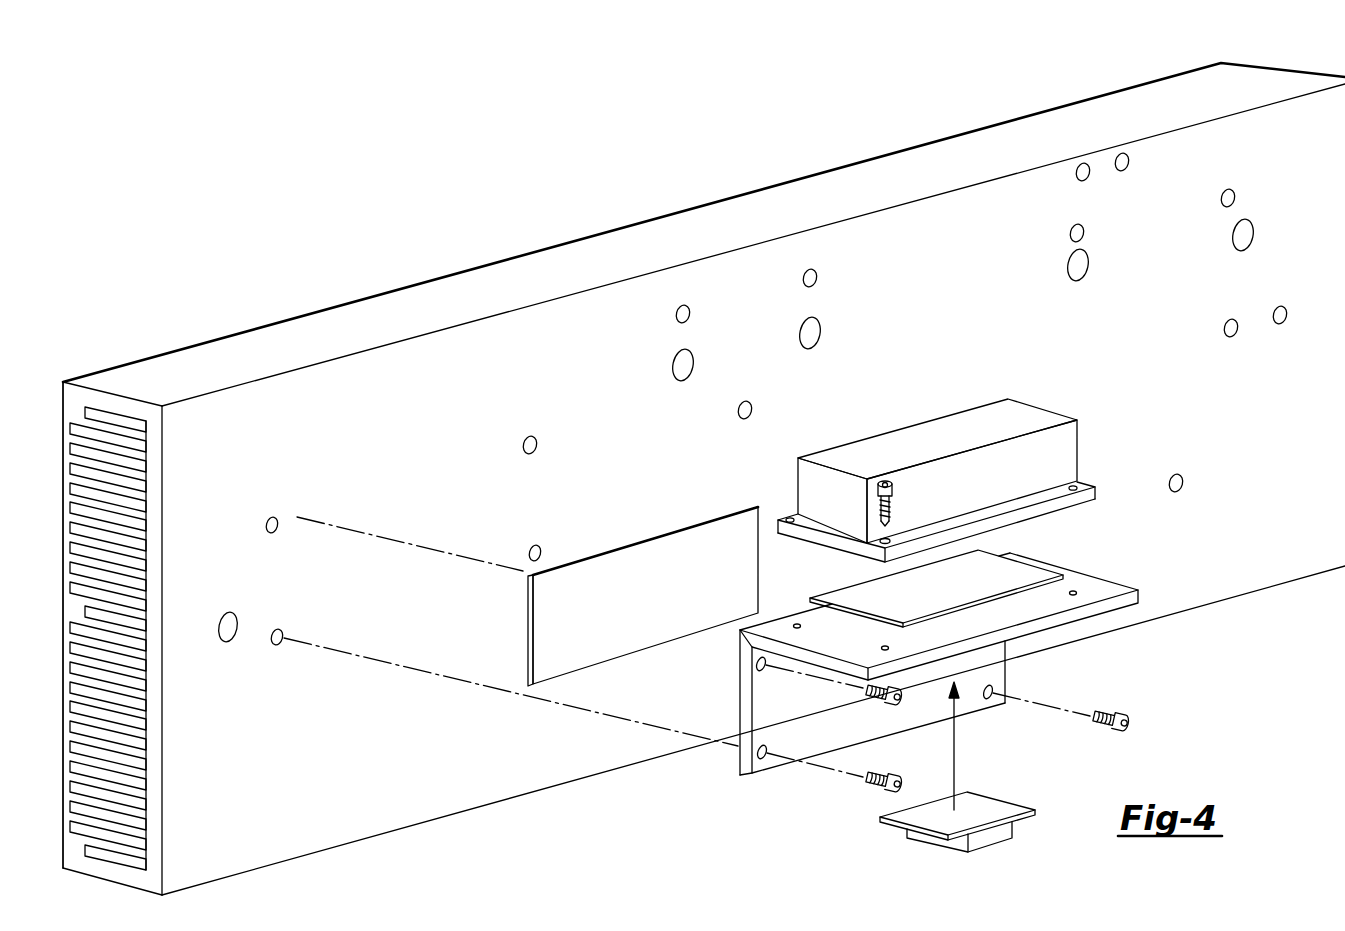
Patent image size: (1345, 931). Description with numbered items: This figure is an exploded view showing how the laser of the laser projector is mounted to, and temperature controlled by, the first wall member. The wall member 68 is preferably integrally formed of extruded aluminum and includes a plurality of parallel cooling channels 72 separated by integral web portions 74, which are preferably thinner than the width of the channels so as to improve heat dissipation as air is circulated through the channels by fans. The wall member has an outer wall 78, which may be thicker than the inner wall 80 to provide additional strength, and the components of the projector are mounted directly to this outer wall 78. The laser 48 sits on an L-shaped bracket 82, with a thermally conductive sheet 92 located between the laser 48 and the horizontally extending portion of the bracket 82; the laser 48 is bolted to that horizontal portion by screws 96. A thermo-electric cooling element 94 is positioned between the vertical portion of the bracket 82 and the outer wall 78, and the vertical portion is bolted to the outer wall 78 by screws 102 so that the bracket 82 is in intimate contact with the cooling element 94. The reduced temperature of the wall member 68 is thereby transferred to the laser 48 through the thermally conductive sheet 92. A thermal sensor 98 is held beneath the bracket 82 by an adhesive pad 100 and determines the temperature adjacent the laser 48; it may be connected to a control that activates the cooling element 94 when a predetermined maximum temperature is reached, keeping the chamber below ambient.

The laser 48 is at (900, 450).
The wall member 68 is at (578, 264).
The cooling channels 72 is at (138, 447).
The web portions 74 is at (112, 666).
The outer wall 78 is at (153, 503).
The inner wall 80 is at (72, 490).
The bracket 82 is at (1105, 587).
The thermally conductive sheet 92 is at (1010, 572).
The thermo-electric cooling element 94 is at (652, 552).
The screws 96 is at (893, 510).
The thermal sensor 98 is at (1000, 835).
The adhesive pad 100 is at (992, 808).
The screws 102 is at (1105, 715).